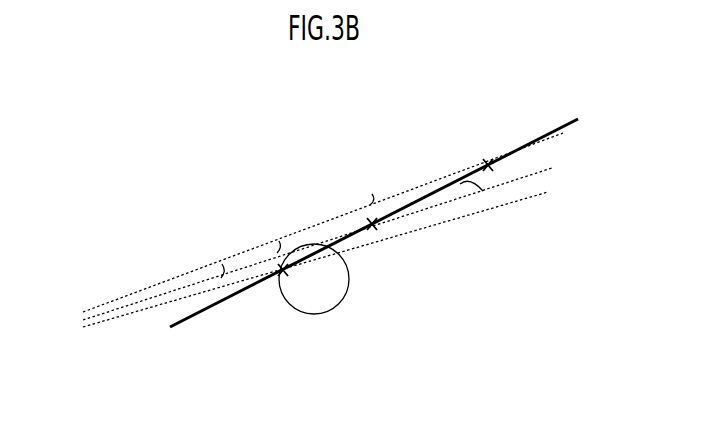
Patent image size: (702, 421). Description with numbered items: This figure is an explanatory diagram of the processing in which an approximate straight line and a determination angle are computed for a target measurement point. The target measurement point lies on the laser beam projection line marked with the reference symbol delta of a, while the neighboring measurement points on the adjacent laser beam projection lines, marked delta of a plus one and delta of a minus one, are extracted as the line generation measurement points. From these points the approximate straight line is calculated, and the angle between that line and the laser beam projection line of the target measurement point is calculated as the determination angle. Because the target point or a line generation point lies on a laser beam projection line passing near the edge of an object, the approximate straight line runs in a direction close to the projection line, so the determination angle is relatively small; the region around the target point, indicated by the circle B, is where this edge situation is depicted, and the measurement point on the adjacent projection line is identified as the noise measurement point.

The boundary region / circle B is at (346, 290).